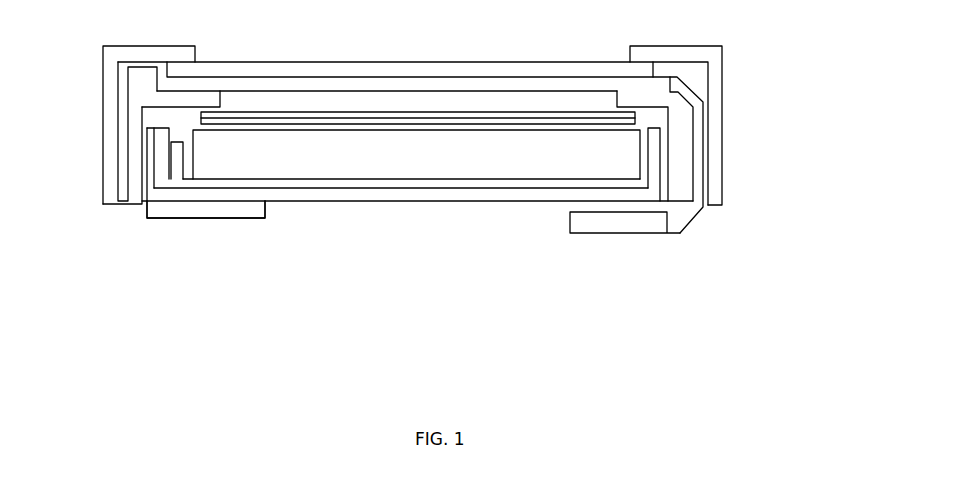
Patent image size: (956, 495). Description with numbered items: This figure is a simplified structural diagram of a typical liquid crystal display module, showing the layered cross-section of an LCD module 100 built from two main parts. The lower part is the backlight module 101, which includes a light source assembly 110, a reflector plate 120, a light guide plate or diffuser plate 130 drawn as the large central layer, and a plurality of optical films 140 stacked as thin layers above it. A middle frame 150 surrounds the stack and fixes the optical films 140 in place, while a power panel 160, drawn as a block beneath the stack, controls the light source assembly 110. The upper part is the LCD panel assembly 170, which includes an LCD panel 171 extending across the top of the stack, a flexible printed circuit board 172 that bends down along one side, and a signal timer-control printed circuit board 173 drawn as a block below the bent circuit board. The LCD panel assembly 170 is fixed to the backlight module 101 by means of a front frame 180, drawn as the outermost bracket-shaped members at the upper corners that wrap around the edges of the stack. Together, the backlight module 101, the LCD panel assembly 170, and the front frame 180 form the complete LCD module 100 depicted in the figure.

The LCD module 100 is at (318, 31).
The backlight module 101 is at (281, 329).
The light source assembly 110 is at (181, 168).
The reflector plate 120 is at (290, 190).
The diffuser plate 130 is at (367, 161).
The optical film 140 is at (459, 129).
The middle frame 150 is at (125, 178).
The power panel 160 is at (171, 217).
The LCD panel assembly 170 is at (522, 57).
The LCD panel 171 is at (458, 68).
The flexible printed circuit board 172 is at (692, 87).
The timer-control printed circuit board 173 is at (624, 224).
The front frame 180 is at (160, 48).